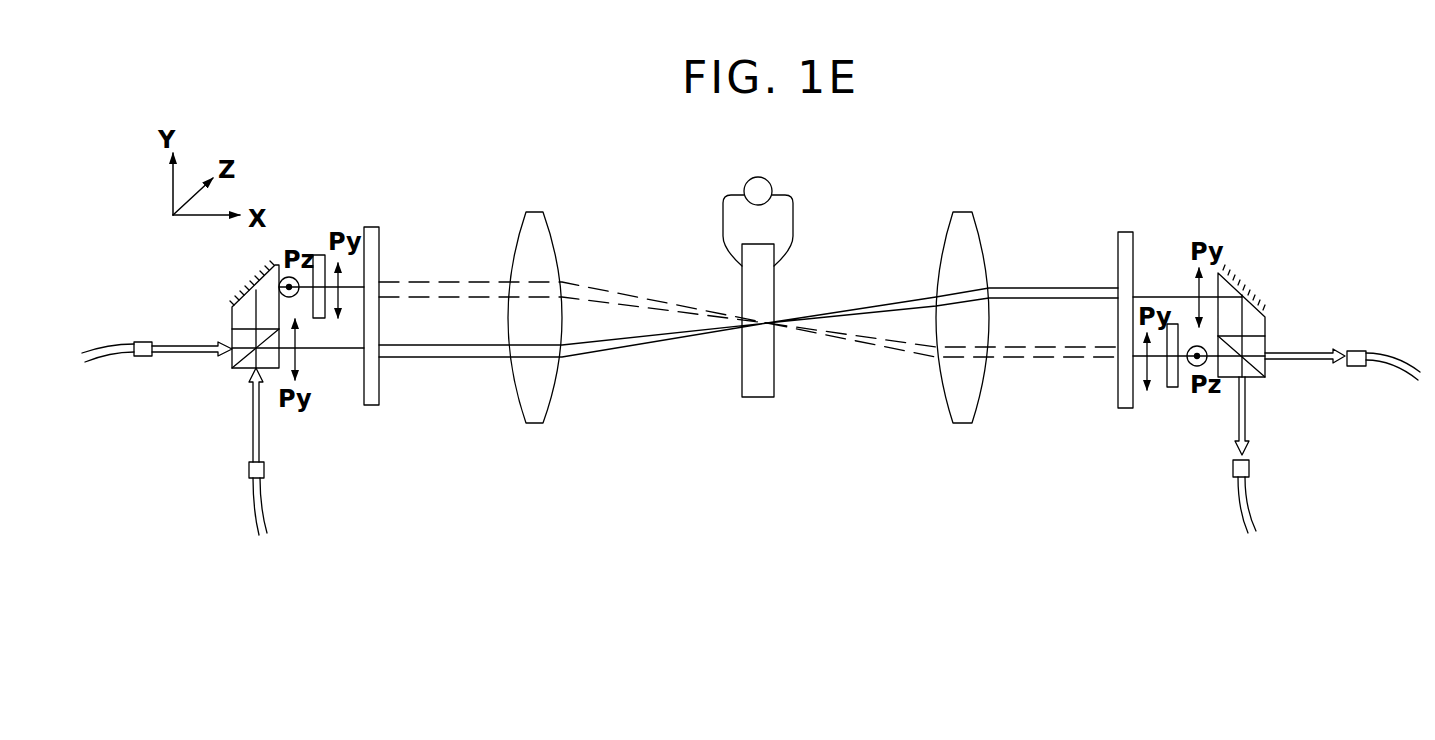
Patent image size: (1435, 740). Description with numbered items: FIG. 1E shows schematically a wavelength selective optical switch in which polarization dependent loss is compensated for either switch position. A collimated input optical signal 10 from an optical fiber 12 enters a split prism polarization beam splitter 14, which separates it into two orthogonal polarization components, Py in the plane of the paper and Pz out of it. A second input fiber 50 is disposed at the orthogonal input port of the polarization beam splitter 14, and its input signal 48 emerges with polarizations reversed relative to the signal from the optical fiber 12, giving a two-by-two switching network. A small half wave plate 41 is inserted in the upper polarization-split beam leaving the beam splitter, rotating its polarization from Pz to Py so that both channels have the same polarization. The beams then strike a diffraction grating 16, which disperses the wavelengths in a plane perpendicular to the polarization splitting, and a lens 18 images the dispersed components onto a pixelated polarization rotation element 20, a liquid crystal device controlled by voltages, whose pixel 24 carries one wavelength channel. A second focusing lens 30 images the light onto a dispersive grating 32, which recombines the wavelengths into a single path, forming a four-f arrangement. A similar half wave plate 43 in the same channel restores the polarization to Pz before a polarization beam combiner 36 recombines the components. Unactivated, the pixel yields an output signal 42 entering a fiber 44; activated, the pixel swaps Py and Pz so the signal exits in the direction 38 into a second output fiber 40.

The input optical signal 10 is at (197, 352).
The optical fiber 12 is at (113, 343).
The polarization beam splitter 14 is at (226, 299).
The diffraction grating 16 is at (371, 405).
The lens 18 is at (550, 403).
The pixelated polarization rotation element 20 is at (740, 325).
The pixel 24 is at (742, 371).
The second focusing lens 30 is at (980, 395).
The dispersive grating 32 is at (1126, 408).
The polarization beam combiner 36 is at (1306, 403).
The exit direction 38 is at (1313, 352).
The second output fiber 40 is at (1385, 350).
The half wave plate 41 is at (318, 255).
The output signal 42 is at (1247, 405).
The half wave plate 43 is at (1172, 387).
The fiber 44 is at (1250, 495).
The input signal 48 is at (259, 432).
The second input fiber 50 is at (252, 500).